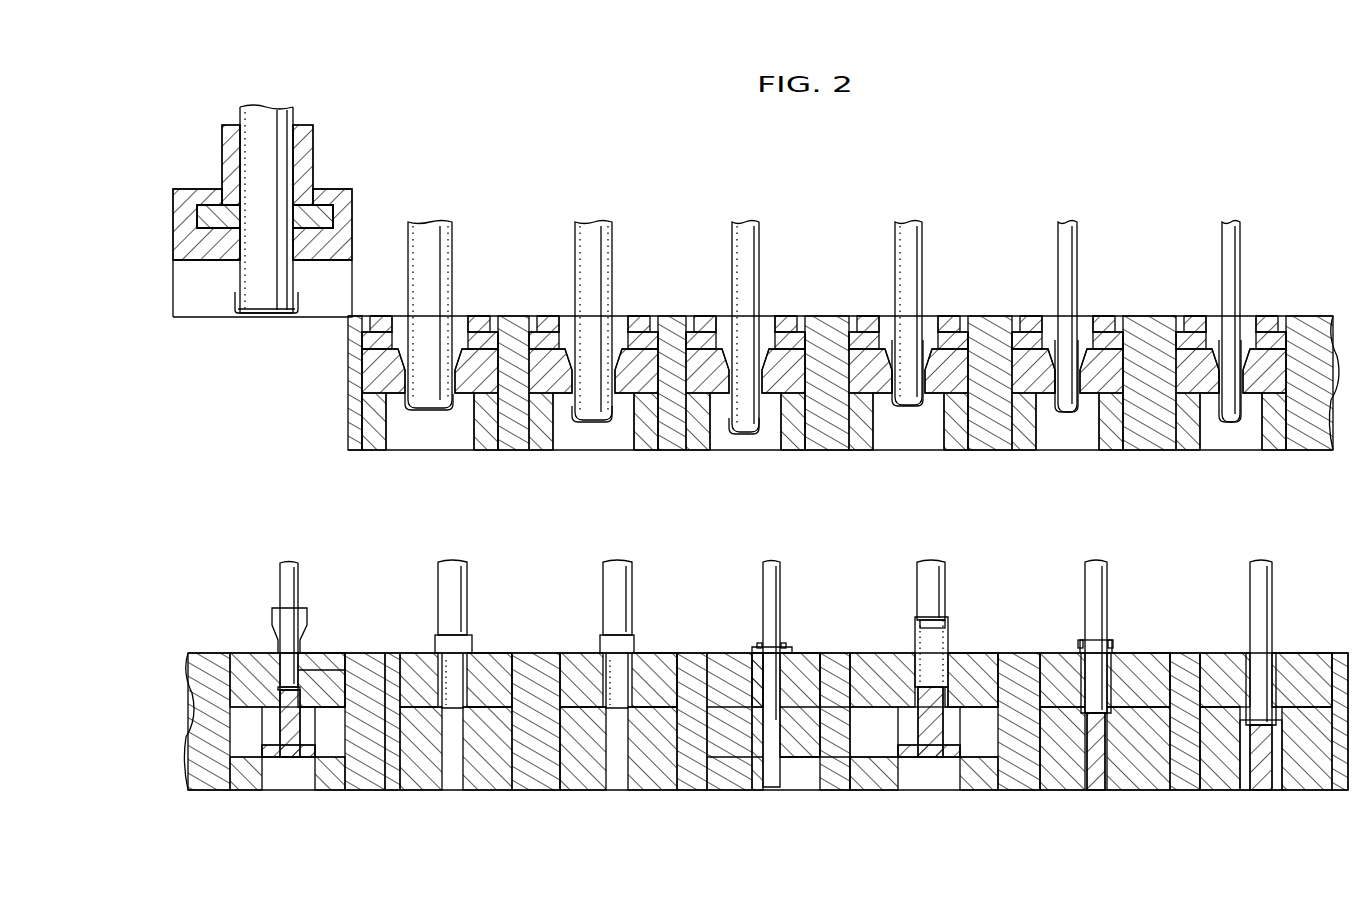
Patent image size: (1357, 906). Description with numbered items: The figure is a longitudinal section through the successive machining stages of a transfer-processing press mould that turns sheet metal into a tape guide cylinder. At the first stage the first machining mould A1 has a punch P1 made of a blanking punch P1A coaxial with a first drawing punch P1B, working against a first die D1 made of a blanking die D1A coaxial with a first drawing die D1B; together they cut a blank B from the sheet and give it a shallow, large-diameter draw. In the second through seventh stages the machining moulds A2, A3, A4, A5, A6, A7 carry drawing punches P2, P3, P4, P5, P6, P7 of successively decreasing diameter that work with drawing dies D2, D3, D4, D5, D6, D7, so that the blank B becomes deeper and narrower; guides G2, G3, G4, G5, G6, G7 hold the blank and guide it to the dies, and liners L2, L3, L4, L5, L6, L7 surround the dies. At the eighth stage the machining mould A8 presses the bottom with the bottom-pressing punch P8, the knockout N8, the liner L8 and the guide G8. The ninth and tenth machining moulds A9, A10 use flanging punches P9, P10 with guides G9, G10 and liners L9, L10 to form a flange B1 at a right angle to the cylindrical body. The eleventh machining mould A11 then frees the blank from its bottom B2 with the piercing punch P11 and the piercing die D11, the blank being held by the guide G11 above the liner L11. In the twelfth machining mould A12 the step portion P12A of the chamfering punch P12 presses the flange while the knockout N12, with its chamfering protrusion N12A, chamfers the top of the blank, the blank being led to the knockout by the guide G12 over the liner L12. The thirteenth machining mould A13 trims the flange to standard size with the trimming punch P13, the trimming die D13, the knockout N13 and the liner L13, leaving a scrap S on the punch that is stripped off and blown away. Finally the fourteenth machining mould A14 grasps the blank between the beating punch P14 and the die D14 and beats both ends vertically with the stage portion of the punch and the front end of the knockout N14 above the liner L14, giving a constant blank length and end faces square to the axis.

The first die D1 is at (157, 166).
The blanking die D1A is at (226, 186).
The No. 1 drawing die D1B is at (189, 232).
The punch P1 is at (392, 106).
The blanking punch P1A is at (304, 159).
The No. 1 drawing punch P1B is at (287, 125).
The first machining mould A1 is at (351, 192).
The blank B is at (270, 315).
The flange B1 is at (478, 635).
The bottom B2 is at (280, 700).
The No. 2 drawing punch P2 is at (432, 230).
The second machining mould A2 is at (398, 312).
The No. 2 guide G2 is at (383, 325).
The No. 2 drawing die D2 is at (476, 357).
The No. 2 liner L2 is at (372, 430).
The No. 3 drawing punch P3 is at (591, 228).
The third machining mould A3 is at (560, 312).
The No. 3 guide G3 is at (551, 317).
The No. 3 drawing die D3 is at (634, 357).
The No. 3 liner L3 is at (548, 435).
The No. 4 drawing punch P4 is at (743, 228).
The fourth machining mould A4 is at (721, 312).
The No. 4 guide G4 is at (706, 316).
The No. 4 drawing die D4 is at (786, 360).
The No. 4 liner L4 is at (700, 435).
The No. 5 drawing punch P5 is at (905, 227).
The fifth machining mould A5 is at (883, 312).
The No. 5 guide G5 is at (869, 316).
The No. 5 drawing die D5 is at (944, 360).
The No. 5 liner L5 is at (858, 435).
The No. 6 drawing punch P6 is at (1067, 222).
The sixth machining mould A6 is at (1043, 312).
The No. 6 guide G6 is at (1029, 316).
The No. 6 drawing die D6 is at (1102, 357).
The No. 6 liner L6 is at (1028, 430).
The No. 7 drawing punch P7 is at (1230, 222).
The seventh machining mould A7 is at (1205, 312).
The No. 7 guide G7 is at (1191, 316).
The No. 7 drawing die D7 is at (1276, 357).
The No. 7 liner L7 is at (1191, 432).
The No. 8 bottom-pressing punch P8 is at (290, 562).
The eighth machining mould A8 is at (238, 650).
The No. 8 guide G8 is at (321, 647).
The No. 8 liner L8 is at (250, 762).
The No. 8 knockout N8 is at (288, 755).
The No. 9 flanging punch P9 is at (458, 562).
The ninth machining mould A9 is at (416, 650).
The No. 9 guide G9 is at (488, 660).
The No. 9 liner L9 is at (420, 768).
The No. 10 flanging punch P10 is at (624, 562).
The tenth machining mould A10 is at (588, 650).
The No. 10 guide G10 is at (651, 660).
The No. 10 liner L10 is at (595, 772).
The No. 11 piercing punch P11 is at (773, 562).
The eleventh machining mould A11 is at (745, 650).
The No. 11 guide G11 is at (747, 654).
The No. 11 piercing die D11 is at (802, 712).
The No. 11 liner L11 is at (755, 772).
The No. 12 chamfering punch P12 is at (934, 562).
The step portion P12A is at (930, 615).
The twelfth machining mould A12 is at (853, 650).
The No. 12 guide G12 is at (880, 651).
The chamfering protrusion N12A is at (950, 667).
The No. 12 liner L12 is at (905, 772).
The No. 12 knockout N12 is at (932, 752).
The No. 13 trimming punch P13 is at (1096, 562).
The thirteenth machining mould A13 is at (1055, 650).
The scrap S is at (1084, 634).
The No. 13 trimming die D13 is at (1130, 653).
The No. 13 liner L13 is at (1075, 772).
The No. 13 knockout N13 is at (1090, 742).
The beating punch P14 is at (1260, 562).
The fourteenth machining mould A14 is at (1237, 650).
The No. 14 die D14 is at (1290, 656).
The No. 14 liner L14 is at (1230, 772).
The No. 14 knockout N14 is at (1262, 762).